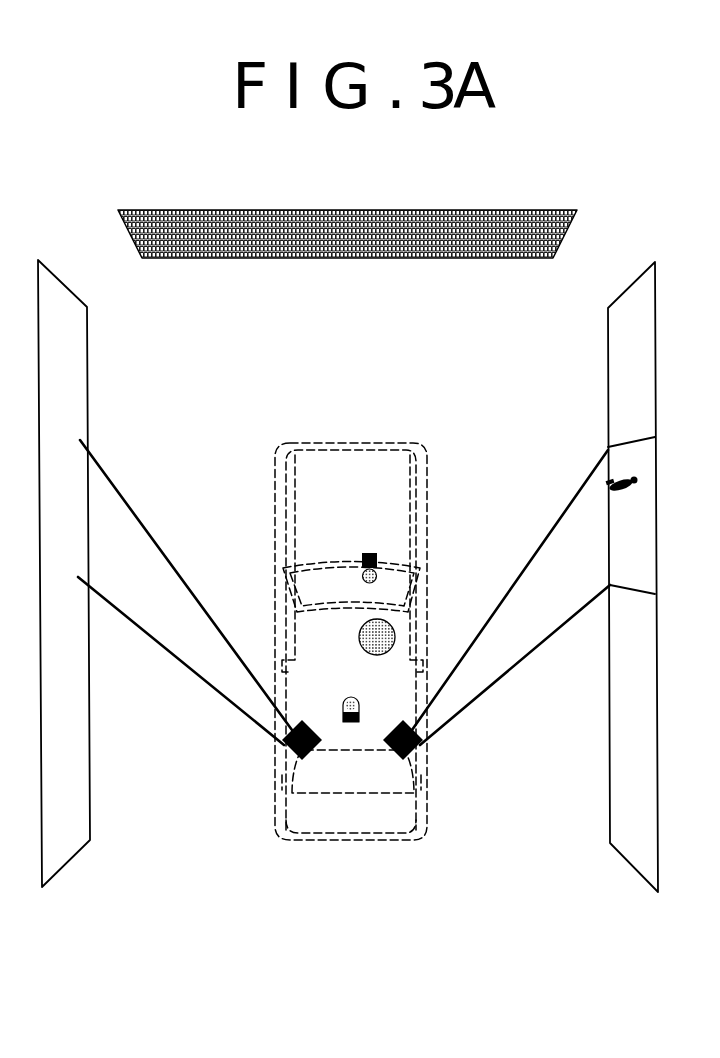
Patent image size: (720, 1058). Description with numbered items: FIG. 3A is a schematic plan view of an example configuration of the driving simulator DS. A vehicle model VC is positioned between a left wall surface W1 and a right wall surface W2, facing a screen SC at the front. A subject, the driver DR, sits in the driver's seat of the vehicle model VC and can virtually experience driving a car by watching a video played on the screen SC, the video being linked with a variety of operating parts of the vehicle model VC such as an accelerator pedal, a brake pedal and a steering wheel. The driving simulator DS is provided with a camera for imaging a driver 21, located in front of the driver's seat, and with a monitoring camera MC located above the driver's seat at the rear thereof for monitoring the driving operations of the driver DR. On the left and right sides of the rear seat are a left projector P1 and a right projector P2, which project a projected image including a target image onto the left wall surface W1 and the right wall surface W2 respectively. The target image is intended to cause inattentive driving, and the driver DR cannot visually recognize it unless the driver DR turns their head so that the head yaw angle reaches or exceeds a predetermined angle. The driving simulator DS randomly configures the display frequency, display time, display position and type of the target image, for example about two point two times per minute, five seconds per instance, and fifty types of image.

The screen SC is at (543, 212).
The left wall surface W1 is at (75, 338).
The right wall surface W2 is at (630, 342).
The driving simulator DS is at (228, 495).
The camera for imaging a driver 21 is at (369, 553).
The driver DR is at (395, 637).
The left projector P1 is at (285, 750).
The right projector P2 is at (420, 752).
The monitoring camera MC is at (350, 722).
The vehicle model VC is at (392, 842).